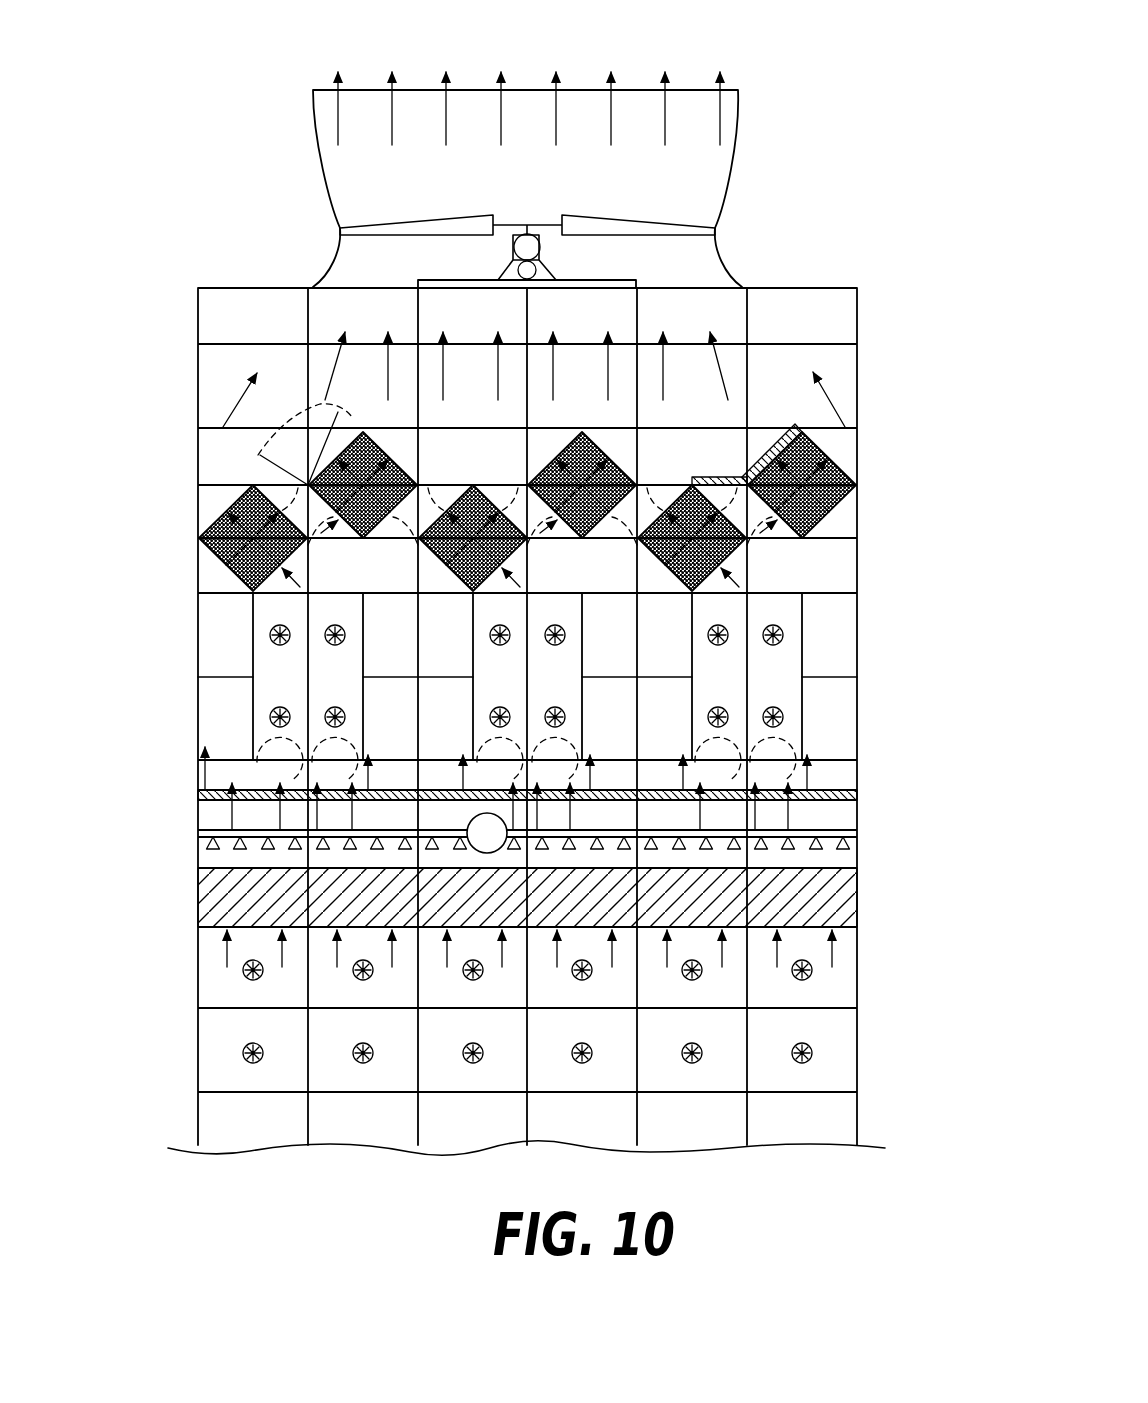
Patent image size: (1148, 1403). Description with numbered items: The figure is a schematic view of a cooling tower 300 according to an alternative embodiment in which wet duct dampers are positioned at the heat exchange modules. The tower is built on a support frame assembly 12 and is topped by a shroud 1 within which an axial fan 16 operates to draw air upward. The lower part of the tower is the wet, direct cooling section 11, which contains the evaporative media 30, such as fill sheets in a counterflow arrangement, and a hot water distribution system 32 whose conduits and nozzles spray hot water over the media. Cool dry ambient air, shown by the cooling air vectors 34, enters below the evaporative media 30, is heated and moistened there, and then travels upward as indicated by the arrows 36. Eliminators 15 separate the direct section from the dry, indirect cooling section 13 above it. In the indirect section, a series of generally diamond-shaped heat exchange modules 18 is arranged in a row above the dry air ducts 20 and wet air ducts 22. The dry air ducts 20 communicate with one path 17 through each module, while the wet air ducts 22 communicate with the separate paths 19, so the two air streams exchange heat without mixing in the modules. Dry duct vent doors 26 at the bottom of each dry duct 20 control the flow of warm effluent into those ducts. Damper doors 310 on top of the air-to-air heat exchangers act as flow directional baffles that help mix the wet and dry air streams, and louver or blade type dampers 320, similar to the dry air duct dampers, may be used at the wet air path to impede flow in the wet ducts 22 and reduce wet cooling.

The cooling tower 300 is at (760, 48).
The exhaust hood 1 is at (740, 134).
The axial fan 16 is at (590, 217).
The support frame assembly 12 is at (826, 287).
The indirect cooling section 13 is at (160, 440).
The damper doors 310 is at (320, 428).
The path 19 is at (343, 455).
The path 17 is at (385, 455).
The heat exchange module 18 is at (237, 507).
The dampers 320 is at (763, 453).
The wet air duct 22 is at (216, 675).
The dry air duct 20 is at (271, 675).
The dry duct vent door 26 is at (288, 756).
The arrows 36 is at (204, 768).
The eliminators 15 is at (857, 795).
The hot water distribution system 32 is at (857, 836).
The evaporative media 30 is at (857, 906).
The direct cooling section 11 is at (183, 989).
The cooling air vectors 34 is at (812, 975).